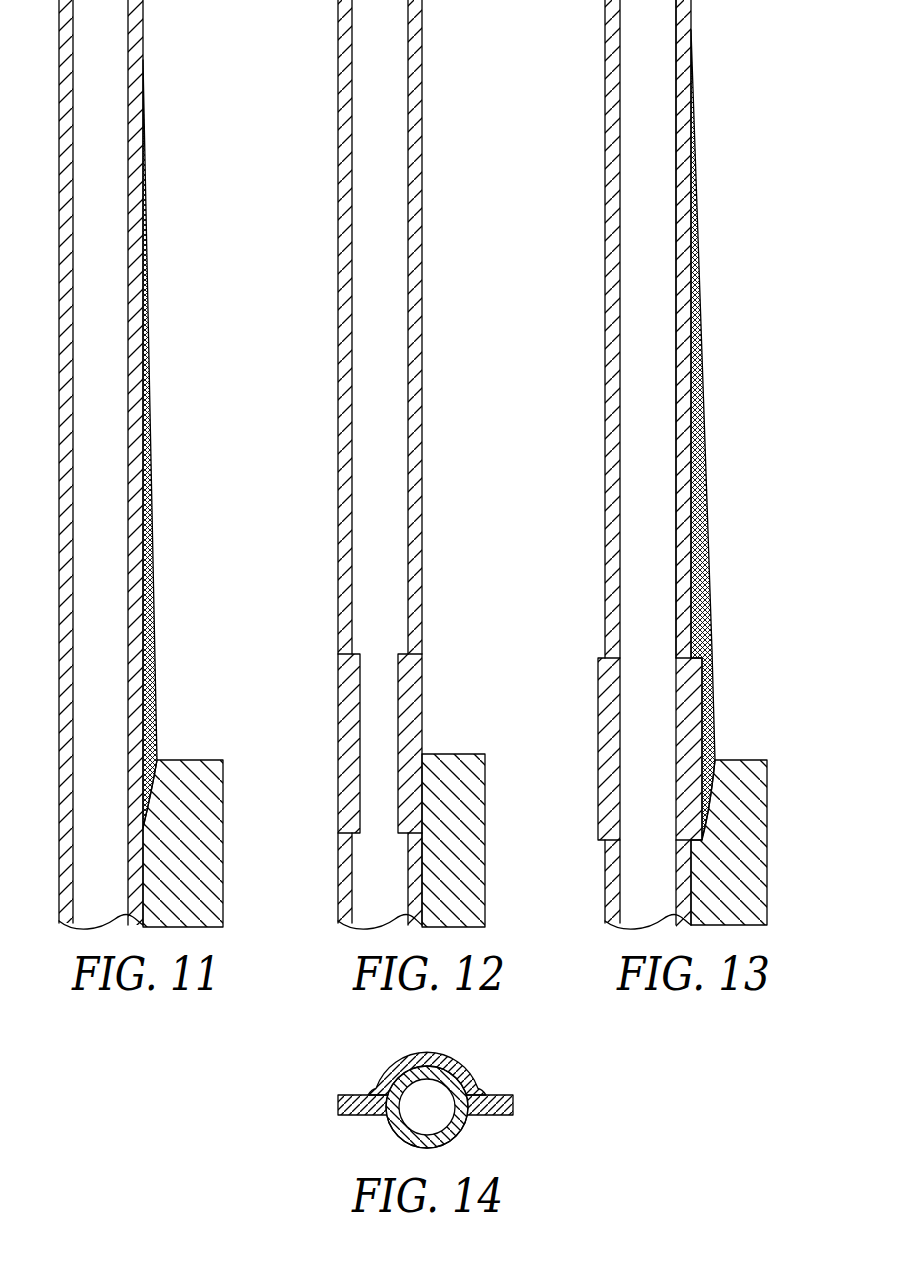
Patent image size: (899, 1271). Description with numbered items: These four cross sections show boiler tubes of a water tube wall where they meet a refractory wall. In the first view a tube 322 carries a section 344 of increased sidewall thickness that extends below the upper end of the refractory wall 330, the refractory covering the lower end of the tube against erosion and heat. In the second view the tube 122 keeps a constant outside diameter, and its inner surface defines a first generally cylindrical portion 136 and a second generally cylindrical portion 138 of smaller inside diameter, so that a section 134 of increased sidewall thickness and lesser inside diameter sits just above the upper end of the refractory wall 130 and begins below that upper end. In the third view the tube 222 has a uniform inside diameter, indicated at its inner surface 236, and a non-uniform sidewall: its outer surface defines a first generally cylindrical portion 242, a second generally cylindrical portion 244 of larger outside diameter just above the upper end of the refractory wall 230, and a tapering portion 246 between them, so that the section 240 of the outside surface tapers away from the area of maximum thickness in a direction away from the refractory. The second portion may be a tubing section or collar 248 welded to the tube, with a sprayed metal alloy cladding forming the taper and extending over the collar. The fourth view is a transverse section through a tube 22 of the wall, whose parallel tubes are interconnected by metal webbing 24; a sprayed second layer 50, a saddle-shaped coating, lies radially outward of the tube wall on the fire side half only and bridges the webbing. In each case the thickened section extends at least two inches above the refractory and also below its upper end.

In FIG. 11, the inner tube wall 322 is at (144, 40).
In FIG. 11, the tapered coating layer 344 is at (157, 684).
In FIG. 11, the refractory wall 330 is at (223, 812).
In FIG. 12, the first generally cylindrical portion 136 is at (345, 570).
In FIG. 12, the second generally cylindrical portion 138 is at (362, 680).
In FIG. 12, the tube wall 122 is at (422, 546).
In FIG. 12, the section of increased sidewall thickness 134 is at (422, 696).
In FIG. 12, the refractory wall 130 is at (485, 812).
In FIG. 13, the tube 222 is at (605, 404).
In FIG. 13, the section of the outside surface 240 is at (732, 463).
In FIG. 13, the first generally cylindrical portion 242 is at (691, 37).
In FIG. 13, the inner surface of tube 236 is at (676, 572).
In FIG. 13, the tapering portion 246 is at (706, 430).
In FIG. 13, the second generally cylindrical portion 244 is at (714, 727).
In FIG. 13, the tubing section or collar 248 is at (690, 692).
In FIG. 13, the refractory wall 230 is at (767, 808).
In FIG. 14, the metal webbing 24 is at (350, 1117).
In FIG. 14, the second layer 50 is at (452, 1058).
In FIG. 14, the metal tube 22 is at (398, 1066).